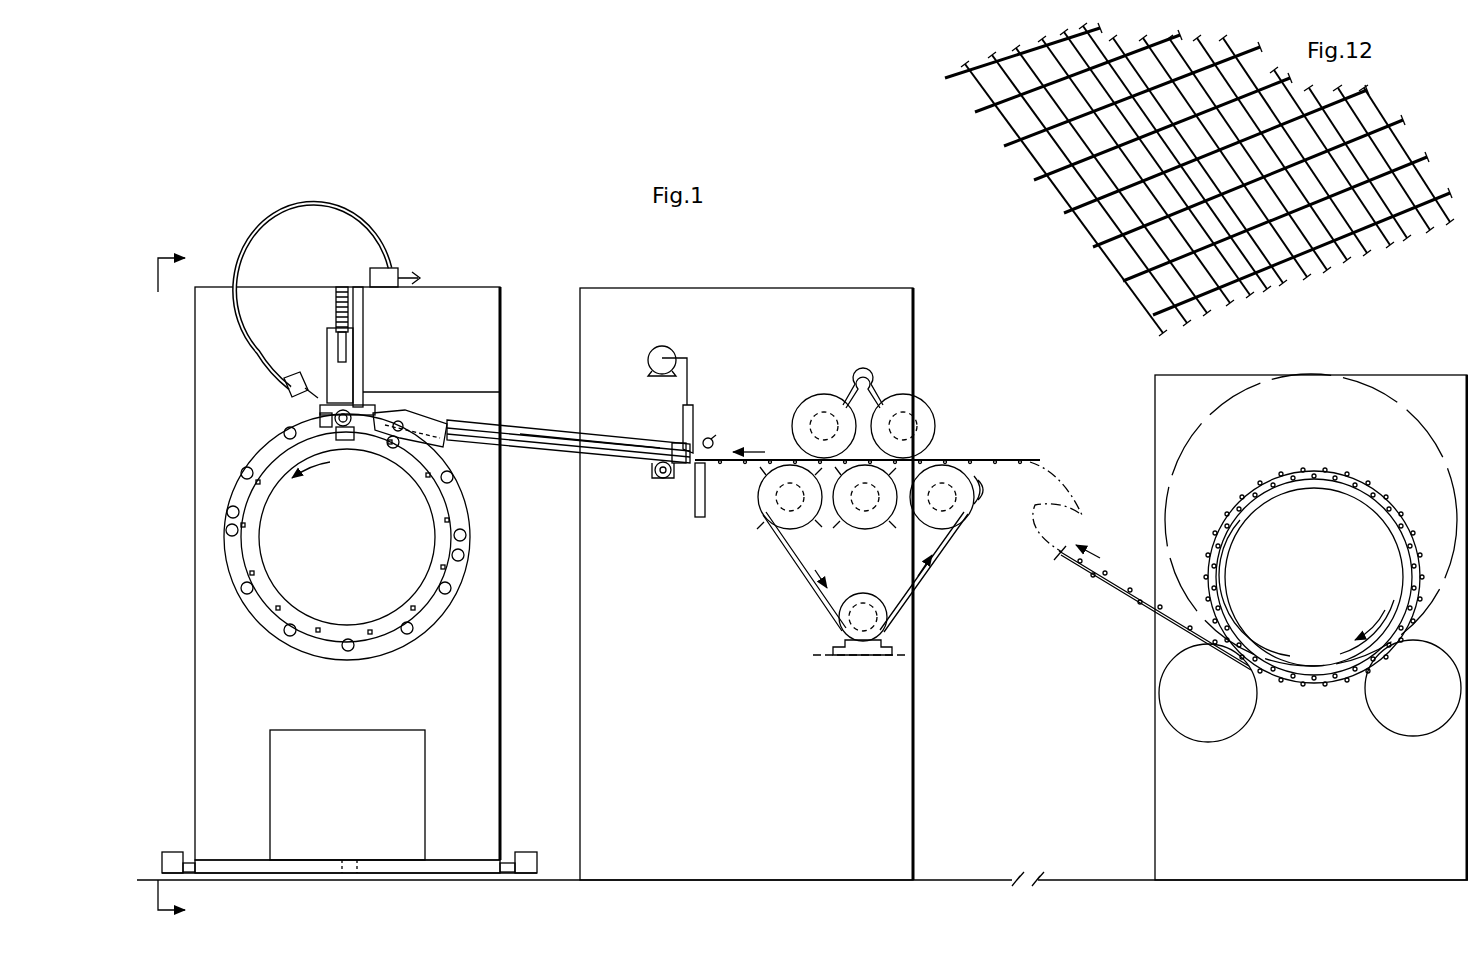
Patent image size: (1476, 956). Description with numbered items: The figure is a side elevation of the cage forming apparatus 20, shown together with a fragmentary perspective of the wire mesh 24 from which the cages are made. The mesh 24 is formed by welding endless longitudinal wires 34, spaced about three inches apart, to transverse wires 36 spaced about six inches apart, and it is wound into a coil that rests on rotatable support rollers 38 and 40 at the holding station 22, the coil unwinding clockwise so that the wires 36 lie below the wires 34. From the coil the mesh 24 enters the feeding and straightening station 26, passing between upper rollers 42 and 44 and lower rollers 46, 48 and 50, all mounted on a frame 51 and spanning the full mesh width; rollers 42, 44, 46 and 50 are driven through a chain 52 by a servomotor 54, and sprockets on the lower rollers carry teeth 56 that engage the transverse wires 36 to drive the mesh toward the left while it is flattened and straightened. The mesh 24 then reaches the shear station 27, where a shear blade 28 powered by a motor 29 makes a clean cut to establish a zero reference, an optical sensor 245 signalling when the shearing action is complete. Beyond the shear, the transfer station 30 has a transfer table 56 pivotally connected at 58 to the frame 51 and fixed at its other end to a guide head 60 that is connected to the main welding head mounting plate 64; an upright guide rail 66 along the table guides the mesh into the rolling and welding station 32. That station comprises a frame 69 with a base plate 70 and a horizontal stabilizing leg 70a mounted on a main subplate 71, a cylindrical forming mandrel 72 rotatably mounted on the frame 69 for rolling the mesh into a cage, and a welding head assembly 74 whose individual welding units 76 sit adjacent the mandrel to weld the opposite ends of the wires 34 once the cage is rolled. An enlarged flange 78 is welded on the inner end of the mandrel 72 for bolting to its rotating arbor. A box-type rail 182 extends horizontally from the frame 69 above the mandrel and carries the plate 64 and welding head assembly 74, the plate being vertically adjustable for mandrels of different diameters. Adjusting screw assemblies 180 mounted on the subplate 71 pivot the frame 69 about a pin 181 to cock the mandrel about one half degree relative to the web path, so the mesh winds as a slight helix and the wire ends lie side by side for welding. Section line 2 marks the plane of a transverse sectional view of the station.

In FIG. 1, the section line 2- 2 is at (162, 590).
In FIG. 1, the cage forming apparatus 20 is at (862, 893).
In FIG. 1, the holding station 22 is at (1271, 627).
In FIG. 1, the wire mesh 24 is at (1010, 452).
In FIG. 12, the wire mesh 24 is at (1206, 179).
In FIG. 1, the feeding and straightening station 26 is at (865, 560).
In FIG. 1, the shear station 27 is at (700, 417).
In FIG. 1, the shear blade 28 is at (682, 414).
In FIG. 1, the motor 29 is at (658, 348).
In FIG. 1, the transfer station 30 is at (568, 462).
In FIG. 1, the rolling and welding station 32 is at (324, 573).
In FIG. 1, the longitudinal wires 34 is at (1125, 590).
In FIG. 12, the longitudinal wires 34 is at (1420, 190).
In FIG. 1, the transverse wires 36 is at (1095, 578).
In FIG. 12, the transverse wires 36 is at (1350, 120).
In FIG. 1, the support roller 38 is at (1192, 706).
In FIG. 1, the support roller 40 is at (1397, 697).
In FIG. 1, the upper roller 42 is at (936, 414).
In FIG. 1, the upper roller 44 is at (822, 395).
In FIG. 1, the lower roller 46 is at (958, 527).
In FIG. 1, the lower roller 48 is at (876, 530).
In FIG. 1, the lower roller 50 is at (768, 528).
In FIG. 1, the frame 51 is at (712, 684).
In FIG. 1, the chain 52 is at (823, 592).
In FIG. 1, the servomotor 54 is at (838, 628).
In FIG. 1, the transfer table 56 is at (604, 458).
In FIG. 1, the pivot connection 58 is at (666, 480).
In FIG. 1, the guide head 60 is at (425, 425).
In FIG. 1, the main welding head mounting plate 64 is at (364, 372).
In FIG. 1, the guide rail 66 is at (548, 428).
In FIG. 1, the frame 69 is at (263, 694).
In FIG. 1, the base plate 70 is at (236, 861).
In FIG. 1, the horizontal stabilizing leg 70a is at (333, 789).
In FIG. 1, the main subplate 71 is at (272, 876).
In FIG. 1, the forming mandrel 72 is at (433, 526).
In FIG. 1, the welding head assembly 74 is at (316, 333).
In FIG. 1, the welding units 76 is at (312, 408).
In FIG. 1, the flange 78 is at (457, 497).
In FIG. 1, the adjusting screw assemblies 180 is at (170, 852).
In FIG. 1, the pin 181 is at (358, 875).
In FIG. 1, the box-type rail 182 is at (414, 330).
In FIG. 1, the optical sensor 245 is at (716, 436).